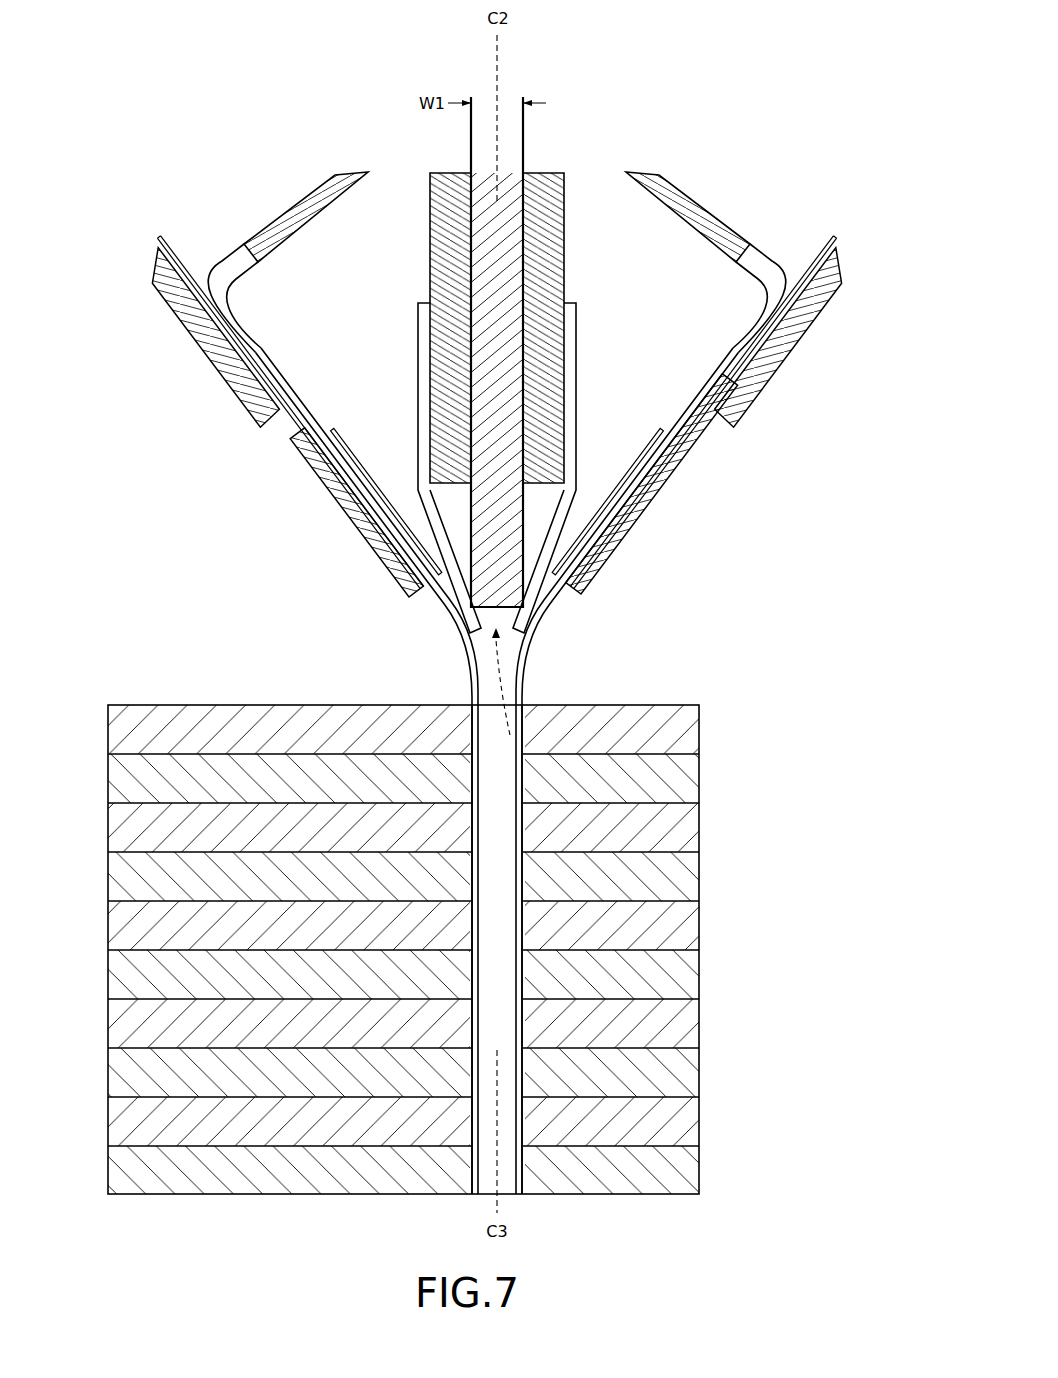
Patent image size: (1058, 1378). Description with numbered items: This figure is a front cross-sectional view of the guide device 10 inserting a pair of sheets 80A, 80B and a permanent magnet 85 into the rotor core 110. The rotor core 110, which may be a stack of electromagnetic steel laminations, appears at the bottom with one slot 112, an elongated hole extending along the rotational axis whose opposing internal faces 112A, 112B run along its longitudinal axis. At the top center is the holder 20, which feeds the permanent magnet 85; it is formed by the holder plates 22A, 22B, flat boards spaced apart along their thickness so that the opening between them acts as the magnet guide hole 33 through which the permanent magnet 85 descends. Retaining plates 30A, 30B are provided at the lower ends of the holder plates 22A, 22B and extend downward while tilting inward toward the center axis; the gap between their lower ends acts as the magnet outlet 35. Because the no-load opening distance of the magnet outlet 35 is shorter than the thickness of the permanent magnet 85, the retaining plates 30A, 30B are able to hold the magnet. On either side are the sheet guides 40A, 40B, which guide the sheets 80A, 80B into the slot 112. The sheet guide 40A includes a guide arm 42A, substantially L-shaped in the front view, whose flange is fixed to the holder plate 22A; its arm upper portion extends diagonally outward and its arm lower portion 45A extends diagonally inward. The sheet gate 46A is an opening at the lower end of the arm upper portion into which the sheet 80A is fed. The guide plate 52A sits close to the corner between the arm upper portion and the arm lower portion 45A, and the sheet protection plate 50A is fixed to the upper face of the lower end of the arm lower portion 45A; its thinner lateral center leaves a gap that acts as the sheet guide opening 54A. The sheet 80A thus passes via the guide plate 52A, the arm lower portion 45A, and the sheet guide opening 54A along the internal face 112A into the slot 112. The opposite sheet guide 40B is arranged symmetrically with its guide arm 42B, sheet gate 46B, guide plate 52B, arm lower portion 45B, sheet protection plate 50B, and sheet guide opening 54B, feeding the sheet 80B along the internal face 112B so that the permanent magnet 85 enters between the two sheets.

The guide device 10 is at (134, 114).
The holder 20 is at (488, 328).
The holder plate 22A is at (440, 238).
The holder plate 22B is at (558, 237).
The retaining plate 30A is at (462, 603).
The retaining plate 30B is at (532, 603).
The magnet guide hole 33 is at (525, 278).
The magnet outlet 35 is at (525, 672).
The sheet guide 40A is at (285, 655).
The sheet guide 40B is at (708, 655).
The guide arm 42A is at (297, 202).
The second upper arm 42B is at (697, 202).
The arm lower portion 45A is at (335, 490).
The second thin plate 45B is at (657, 485).
The sheet gate 46A is at (234, 267).
The second bent portion 46B is at (760, 267).
The sheet protection plate 50A is at (352, 452).
The second lower plate 50B is at (640, 450).
The guide plate 52A is at (190, 332).
The second upper plate 52B is at (802, 325).
The sheet guide opening 54A is at (370, 530).
The second spacer strip 54B is at (630, 525).
The sheet 80A is at (270, 363).
The sheet 80B is at (730, 360).
The permanent magnet 85 is at (515, 228).
The rotor core 110 is at (722, 880).
The slot 112 is at (500, 923).
The internal face 112A is at (483, 735).
The internal face 112B is at (503, 740).